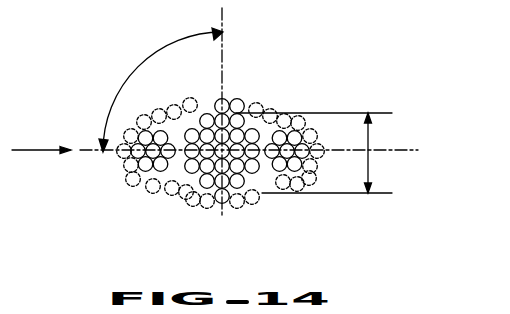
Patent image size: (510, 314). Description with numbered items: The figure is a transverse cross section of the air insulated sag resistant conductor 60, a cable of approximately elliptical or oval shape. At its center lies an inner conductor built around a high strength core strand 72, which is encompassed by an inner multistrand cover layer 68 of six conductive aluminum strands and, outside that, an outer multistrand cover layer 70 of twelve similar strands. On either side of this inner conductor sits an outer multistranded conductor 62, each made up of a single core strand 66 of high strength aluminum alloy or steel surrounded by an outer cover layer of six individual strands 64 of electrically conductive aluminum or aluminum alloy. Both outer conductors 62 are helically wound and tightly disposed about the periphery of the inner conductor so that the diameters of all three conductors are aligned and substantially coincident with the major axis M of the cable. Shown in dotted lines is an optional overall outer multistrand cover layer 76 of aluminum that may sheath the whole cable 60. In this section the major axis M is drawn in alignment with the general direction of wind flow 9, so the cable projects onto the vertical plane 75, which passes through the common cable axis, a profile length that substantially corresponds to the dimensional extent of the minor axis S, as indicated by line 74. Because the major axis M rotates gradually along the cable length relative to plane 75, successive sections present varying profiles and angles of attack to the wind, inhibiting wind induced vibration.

The general direction of wind flow 9 is at (23, 148).
The air insulated sag resistant conductor 60 is at (241, 127).
The outer multistranded conductor 62 is at (165, 188).
The individual strands of outer cover layer 64 is at (133, 157).
The core strand 66 is at (153, 187).
The inner multistrand cover layer 68 is at (238, 206).
The outer multistrand cover layer 70 is at (210, 206).
The core strand 72 is at (236, 130).
The line indicating minor axis extent 74 is at (369, 168).
The vertical plane 75 is at (222, 67).
The overall outer multistrand cover layer 76 is at (166, 109).
The minor axis S is at (230, 255).
The major axis M is at (437, 166).